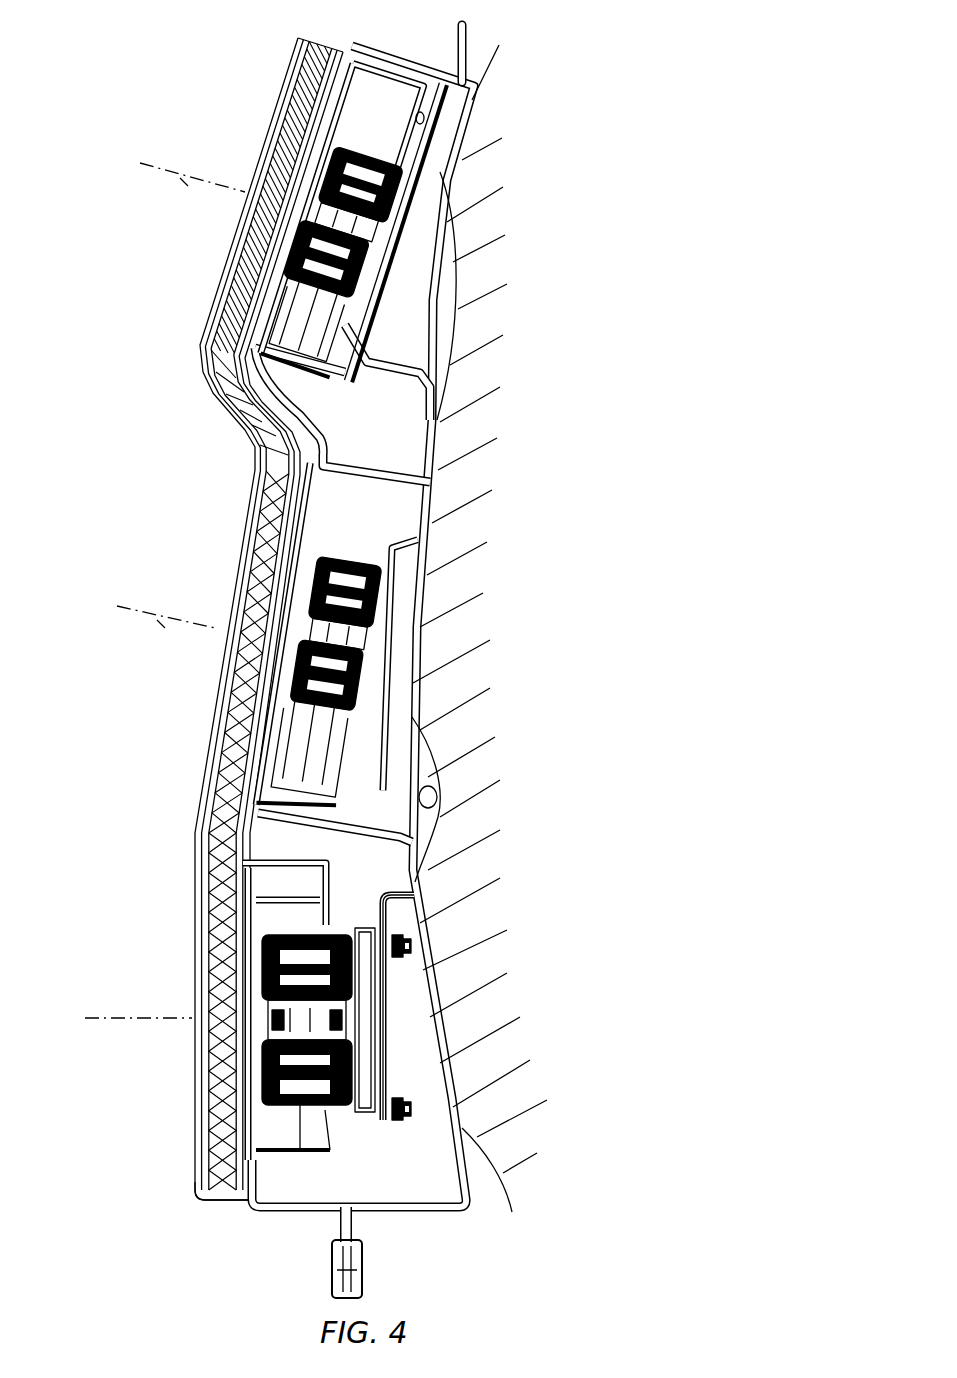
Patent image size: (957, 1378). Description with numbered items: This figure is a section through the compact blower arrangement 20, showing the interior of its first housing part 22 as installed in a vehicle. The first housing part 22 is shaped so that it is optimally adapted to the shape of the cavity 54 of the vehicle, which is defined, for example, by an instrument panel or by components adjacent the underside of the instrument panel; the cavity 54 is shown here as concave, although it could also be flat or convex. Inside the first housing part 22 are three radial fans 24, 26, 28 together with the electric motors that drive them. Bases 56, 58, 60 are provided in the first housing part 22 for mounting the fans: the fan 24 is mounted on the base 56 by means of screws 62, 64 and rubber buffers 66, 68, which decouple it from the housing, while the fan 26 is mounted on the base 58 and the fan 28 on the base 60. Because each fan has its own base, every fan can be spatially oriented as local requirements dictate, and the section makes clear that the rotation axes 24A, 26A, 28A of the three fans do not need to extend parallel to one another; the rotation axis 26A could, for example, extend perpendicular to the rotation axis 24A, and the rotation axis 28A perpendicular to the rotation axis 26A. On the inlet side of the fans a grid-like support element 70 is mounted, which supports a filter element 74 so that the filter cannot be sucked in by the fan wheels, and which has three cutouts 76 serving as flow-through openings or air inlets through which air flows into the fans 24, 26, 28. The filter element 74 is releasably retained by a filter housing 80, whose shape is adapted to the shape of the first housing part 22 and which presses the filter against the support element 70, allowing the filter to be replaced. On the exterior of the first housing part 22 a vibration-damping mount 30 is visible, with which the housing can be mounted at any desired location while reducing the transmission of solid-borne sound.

The blower arrangement 20 is at (191, 110).
The first housing part 22 is at (253, 1213).
The radial fan 24 is at (409, 1014).
The rotation axis 24A is at (130, 1005).
The radial fan 26 is at (403, 648).
The rotation axis 26A is at (160, 626).
The radial fan 28 is at (418, 219).
The rotation axis 28A is at (182, 184).
The vibration-damping mount 30 is at (363, 1283).
The cavity 54 is at (437, 787).
The base 56 is at (390, 1003).
The base 58 is at (388, 628).
The base 60 is at (405, 258).
The screw 62 is at (433, 927).
The screw 64 is at (413, 1108).
The rubber buffer 66 is at (400, 893).
The rubber buffer 68 is at (387, 1060).
The support element 70 is at (217, 703).
The filter element 74 is at (203, 777).
The cutout 76 is at (241, 622).
The filter housing 80 is at (193, 1197).